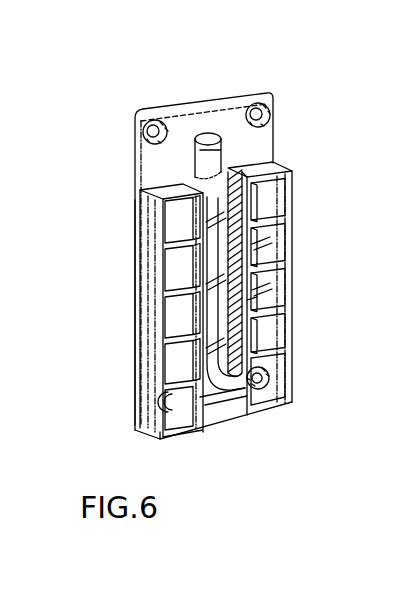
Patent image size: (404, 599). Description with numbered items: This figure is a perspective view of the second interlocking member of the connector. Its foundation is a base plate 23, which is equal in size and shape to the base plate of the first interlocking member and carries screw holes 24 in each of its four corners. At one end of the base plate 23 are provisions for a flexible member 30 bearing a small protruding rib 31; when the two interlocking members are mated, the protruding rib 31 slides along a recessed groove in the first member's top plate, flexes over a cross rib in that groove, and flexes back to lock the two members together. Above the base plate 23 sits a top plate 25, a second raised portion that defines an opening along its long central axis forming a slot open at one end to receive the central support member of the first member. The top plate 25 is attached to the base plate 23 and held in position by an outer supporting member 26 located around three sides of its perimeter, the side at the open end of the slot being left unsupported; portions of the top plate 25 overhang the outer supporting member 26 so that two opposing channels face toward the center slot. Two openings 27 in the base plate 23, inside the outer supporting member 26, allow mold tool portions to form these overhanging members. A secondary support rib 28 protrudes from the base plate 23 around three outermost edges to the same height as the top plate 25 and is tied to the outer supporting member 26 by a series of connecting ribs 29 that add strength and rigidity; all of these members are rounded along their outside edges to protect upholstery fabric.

The base plate 23 is at (183, 122).
The screw holes 24 is at (275, 120).
The top plate 25 is at (257, 297).
The outer supporting member 26 is at (157, 214).
The openings 27 is at (230, 306).
The secondary support rib 28 is at (148, 272).
The connecting ribs 29 is at (283, 375).
The flexible member 30 is at (262, 184).
The protruding rib 31 is at (213, 126).